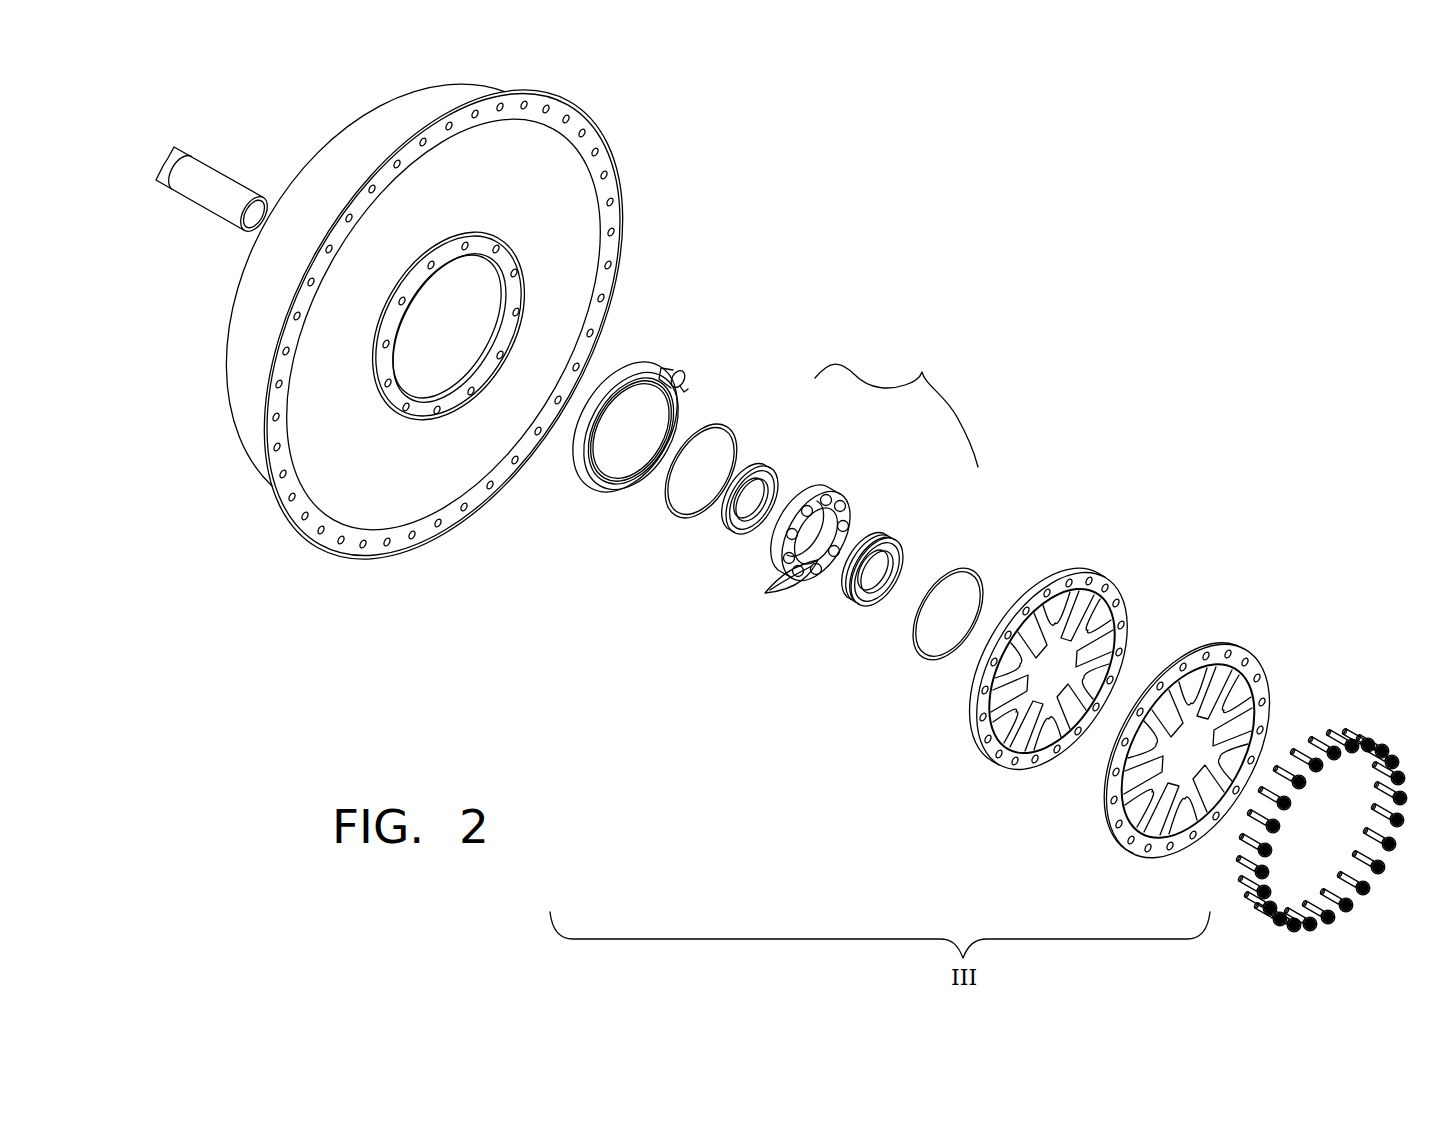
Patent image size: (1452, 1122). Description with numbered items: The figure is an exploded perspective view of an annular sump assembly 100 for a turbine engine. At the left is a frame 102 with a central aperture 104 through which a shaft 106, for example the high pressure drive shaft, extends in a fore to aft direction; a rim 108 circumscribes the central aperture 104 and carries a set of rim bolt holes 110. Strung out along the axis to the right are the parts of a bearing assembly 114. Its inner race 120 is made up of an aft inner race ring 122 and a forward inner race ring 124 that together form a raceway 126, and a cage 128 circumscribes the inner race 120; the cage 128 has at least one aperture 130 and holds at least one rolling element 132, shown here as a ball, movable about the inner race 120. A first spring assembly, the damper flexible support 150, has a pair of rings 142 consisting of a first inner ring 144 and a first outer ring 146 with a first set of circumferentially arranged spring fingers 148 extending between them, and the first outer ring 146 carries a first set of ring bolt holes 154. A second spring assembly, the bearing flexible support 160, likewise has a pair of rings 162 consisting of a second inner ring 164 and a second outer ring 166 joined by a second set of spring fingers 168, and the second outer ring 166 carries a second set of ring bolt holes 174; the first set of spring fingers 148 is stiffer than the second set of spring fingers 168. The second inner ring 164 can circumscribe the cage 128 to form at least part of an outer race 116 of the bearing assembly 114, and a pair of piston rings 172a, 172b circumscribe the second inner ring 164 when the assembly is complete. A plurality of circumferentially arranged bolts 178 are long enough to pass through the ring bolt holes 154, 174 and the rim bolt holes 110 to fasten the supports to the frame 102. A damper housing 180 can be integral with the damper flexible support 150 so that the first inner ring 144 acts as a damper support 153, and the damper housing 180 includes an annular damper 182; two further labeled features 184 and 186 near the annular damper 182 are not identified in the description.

The sump assembly 100 is at (1068, 200).
The frame 102 is at (600, 98).
The central aperture 104 is at (426, 385).
The shaft 106 is at (228, 178).
The rim 108 is at (518, 283).
The set of rim bolt holes 110 is at (466, 243).
The bearing assembly 114 is at (947, 366).
The outer race 116 is at (1208, 830).
The inner race 120 is at (724, 550).
The aft inner race ring 122 is at (895, 556).
The forward inner race ring 124 is at (755, 475).
The raceway 126 is at (742, 458).
The cage 128 is at (840, 512).
The aperture 130 is at (800, 497).
The rolling element 132 is at (765, 594).
The pair of rings 142 is at (1079, 552).
The first inner ring 144 is at (985, 657).
The first outer ring 146 is at (1077, 584).
The first set of spring fingers 148 is at (1160, 662).
The damper flexible support 150 is at (1178, 548).
The damper support 153 is at (1000, 748).
The first set of ring bolt holes 154 is at (1112, 605).
The bearing flexible support 160 is at (1283, 628).
The pair of rings 162 is at (1105, 805).
The second inner ring 164 is at (1095, 750).
The second outer ring 166 is at (1240, 660).
The second set of spring fingers 168 is at (1258, 727).
The piston ring 172a is at (668, 513).
The piston ring 172b is at (920, 645).
The second set of ring bolt holes 174 is at (1247, 687).
The bolts 178 is at (1340, 738).
The damper housing 180 is at (945, 700).
The annular damper 182 is at (630, 370).
The clamp 184 is at (678, 370).
The clamp screw 186 is at (684, 386).